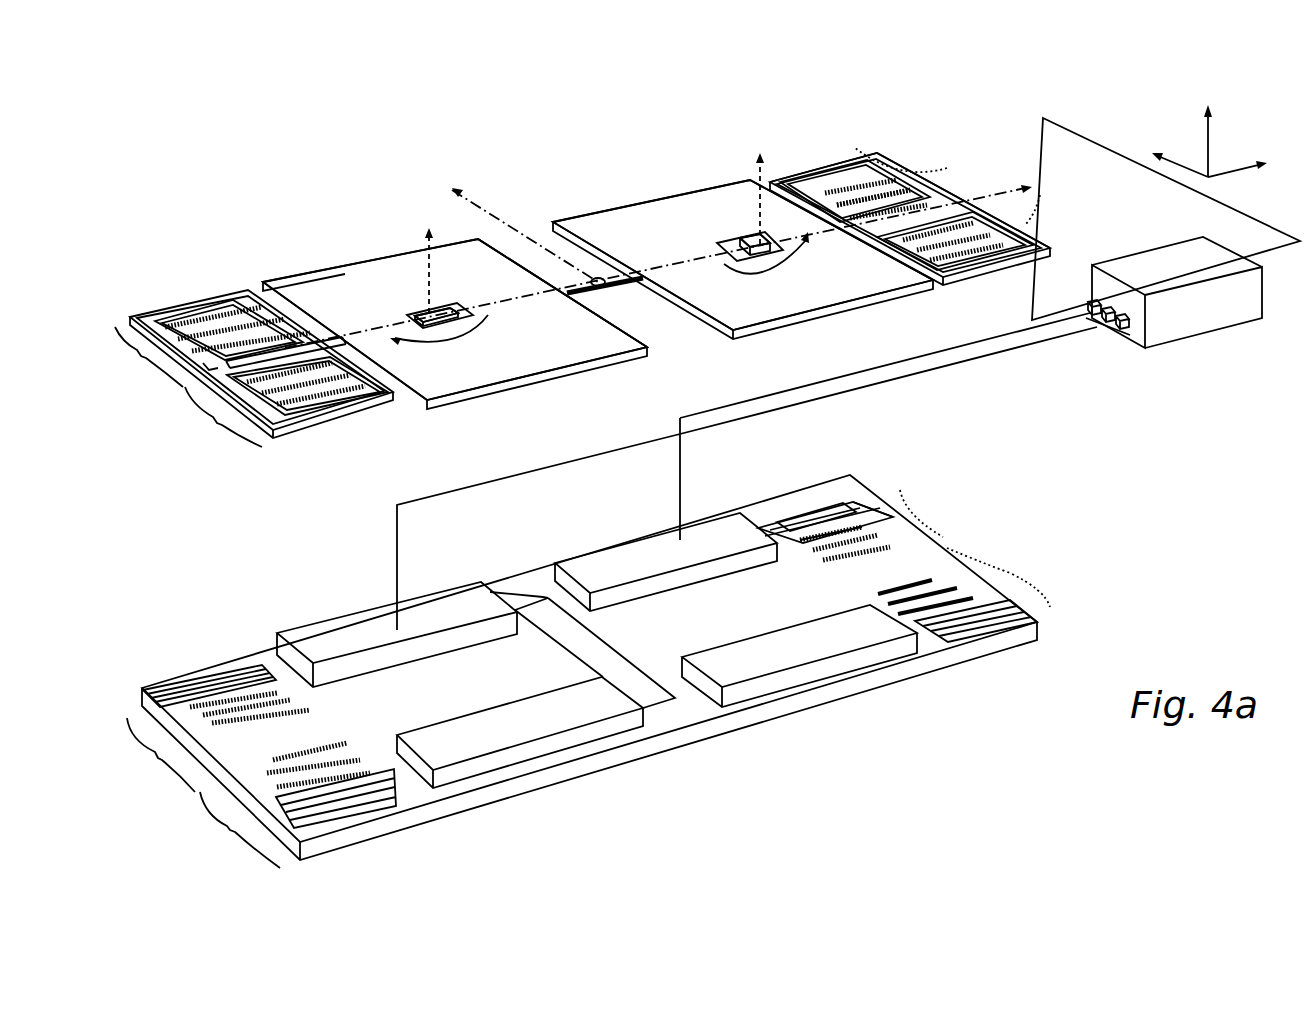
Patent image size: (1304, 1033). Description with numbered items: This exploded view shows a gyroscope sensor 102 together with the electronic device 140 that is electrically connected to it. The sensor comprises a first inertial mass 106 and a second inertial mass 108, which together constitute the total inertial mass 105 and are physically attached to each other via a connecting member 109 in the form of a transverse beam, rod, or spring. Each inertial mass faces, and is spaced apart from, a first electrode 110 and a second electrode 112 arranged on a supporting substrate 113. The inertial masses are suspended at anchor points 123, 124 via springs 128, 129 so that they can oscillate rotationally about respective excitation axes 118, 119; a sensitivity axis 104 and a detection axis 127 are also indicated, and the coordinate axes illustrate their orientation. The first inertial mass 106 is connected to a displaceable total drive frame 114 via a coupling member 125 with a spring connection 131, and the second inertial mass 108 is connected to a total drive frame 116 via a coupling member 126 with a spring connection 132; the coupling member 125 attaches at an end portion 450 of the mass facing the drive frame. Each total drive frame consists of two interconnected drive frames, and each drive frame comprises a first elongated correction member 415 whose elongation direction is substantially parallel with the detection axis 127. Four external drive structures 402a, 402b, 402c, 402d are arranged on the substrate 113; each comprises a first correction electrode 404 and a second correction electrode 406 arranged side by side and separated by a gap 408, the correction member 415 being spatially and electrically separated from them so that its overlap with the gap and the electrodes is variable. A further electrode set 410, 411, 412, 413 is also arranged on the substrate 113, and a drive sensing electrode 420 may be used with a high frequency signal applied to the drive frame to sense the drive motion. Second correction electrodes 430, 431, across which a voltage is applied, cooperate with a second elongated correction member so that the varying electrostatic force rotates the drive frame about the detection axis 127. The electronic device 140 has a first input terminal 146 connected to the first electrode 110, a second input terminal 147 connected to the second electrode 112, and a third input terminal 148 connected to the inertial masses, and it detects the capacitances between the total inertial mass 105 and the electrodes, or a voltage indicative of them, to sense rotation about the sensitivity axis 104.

The gyroscope sensor 102 is at (238, 145).
The sensitivity axis 104 is at (497, 218).
The total inertial mass 105 is at (447, 257).
The first inertial mass 106 is at (613, 217).
The second inertial mass 108 is at (285, 283).
The connecting member 109 is at (622, 283).
The first electrode 110 is at (615, 553).
The second electrode 112 is at (343, 622).
The supporting substrate 113 is at (933, 645).
The total drive frame 114 is at (964, 180).
The total drive frame 116 is at (234, 351).
The excitation axis 118 is at (762, 172).
The excitation axis 119 is at (425, 225).
The anchor point 123 is at (415, 313).
The anchor point 124 is at (750, 240).
The coupling member 125 is at (895, 198).
The coupling member 126 is at (290, 352).
The detection axis 127 is at (1045, 122).
The spring 128 is at (448, 310).
The spring 129 is at (737, 240).
The spring type connection 131 is at (937, 212).
The spring type connection 132 is at (208, 367).
The electronic device 140 is at (1190, 310).
The first input terminal 146 is at (1110, 325).
The second input terminal 147 is at (1122, 325).
The third input terminal 148 is at (1092, 302).
The drive structure 402a is at (947, 168).
The drive structure 402b is at (1040, 195).
The drive structure 402c is at (136, 559).
The drive structure 402d is at (216, 627).
The first correction electrode 404 is at (851, 512).
The second correction electrode 406 is at (870, 520).
The gap 408 is at (860, 517).
The electrode of further electrode set 410 is at (805, 543).
The electrode of further electrode set 411 is at (817, 557).
The electrode of further electrode set 412 is at (822, 562).
The electrode of further electrode set 413 is at (943, 537).
The first elongated correction member 415 is at (866, 165).
The drive sensing electrode 420 is at (1012, 601).
The correction electrode 430 is at (797, 520).
The correction electrode 431 is at (813, 510).
The end portion 450 is at (838, 196).